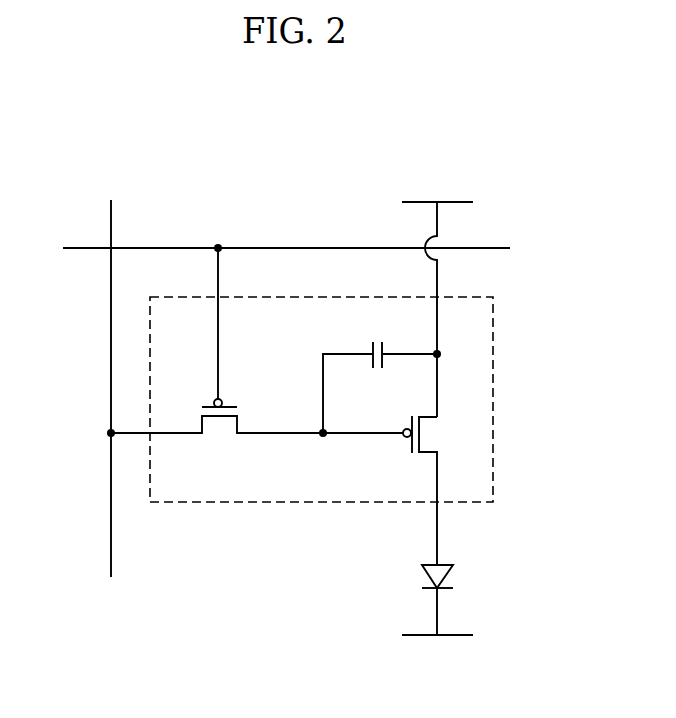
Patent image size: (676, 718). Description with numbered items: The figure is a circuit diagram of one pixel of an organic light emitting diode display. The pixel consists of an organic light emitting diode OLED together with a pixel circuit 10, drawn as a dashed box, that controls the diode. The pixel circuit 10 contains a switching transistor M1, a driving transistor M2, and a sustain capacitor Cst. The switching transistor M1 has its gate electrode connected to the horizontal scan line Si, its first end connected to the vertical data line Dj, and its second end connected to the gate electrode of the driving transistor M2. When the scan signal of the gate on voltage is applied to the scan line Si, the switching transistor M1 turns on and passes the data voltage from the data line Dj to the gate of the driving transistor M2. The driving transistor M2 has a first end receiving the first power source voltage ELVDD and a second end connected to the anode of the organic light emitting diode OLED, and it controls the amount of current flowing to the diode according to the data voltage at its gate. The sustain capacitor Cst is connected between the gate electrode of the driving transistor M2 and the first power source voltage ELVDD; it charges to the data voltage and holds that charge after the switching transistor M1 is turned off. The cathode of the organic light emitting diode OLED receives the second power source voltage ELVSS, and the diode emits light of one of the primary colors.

The pixel circuit 10 is at (493, 365).
The switching transistor M1 is at (257, 357).
The driving transistor M2 is at (439, 490).
The sustain capacitor Cst is at (380, 370).
The organic light emitting diode OLED is at (471, 599).
The first power source voltage ELVDD is at (437, 293).
The second power source voltage ELVSS is at (437, 651).
The scan line Si is at (272, 249).
The data line Dj is at (111, 373).